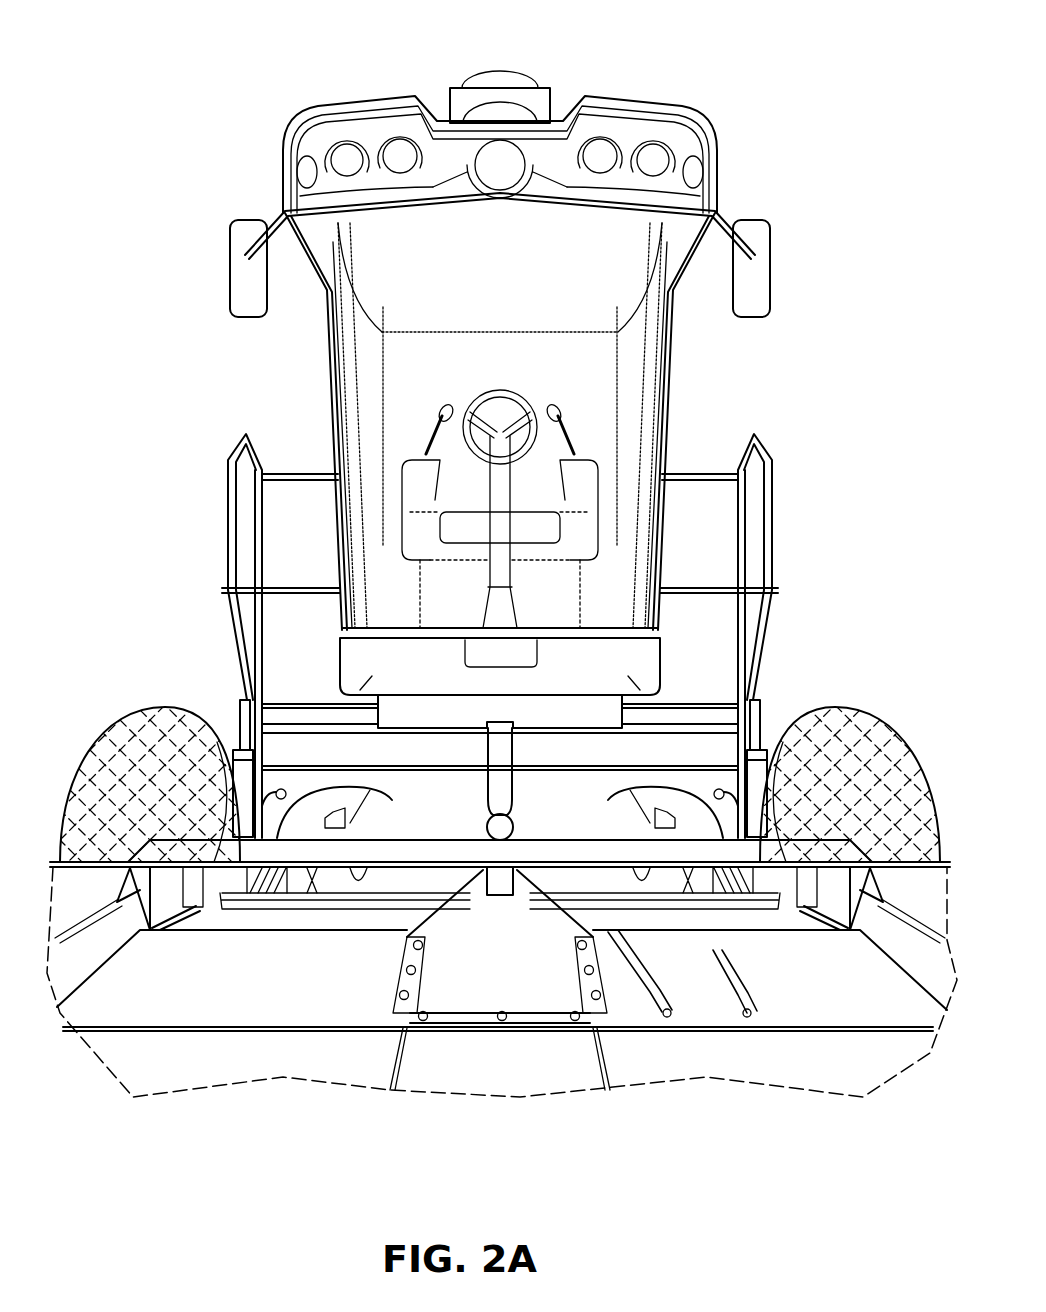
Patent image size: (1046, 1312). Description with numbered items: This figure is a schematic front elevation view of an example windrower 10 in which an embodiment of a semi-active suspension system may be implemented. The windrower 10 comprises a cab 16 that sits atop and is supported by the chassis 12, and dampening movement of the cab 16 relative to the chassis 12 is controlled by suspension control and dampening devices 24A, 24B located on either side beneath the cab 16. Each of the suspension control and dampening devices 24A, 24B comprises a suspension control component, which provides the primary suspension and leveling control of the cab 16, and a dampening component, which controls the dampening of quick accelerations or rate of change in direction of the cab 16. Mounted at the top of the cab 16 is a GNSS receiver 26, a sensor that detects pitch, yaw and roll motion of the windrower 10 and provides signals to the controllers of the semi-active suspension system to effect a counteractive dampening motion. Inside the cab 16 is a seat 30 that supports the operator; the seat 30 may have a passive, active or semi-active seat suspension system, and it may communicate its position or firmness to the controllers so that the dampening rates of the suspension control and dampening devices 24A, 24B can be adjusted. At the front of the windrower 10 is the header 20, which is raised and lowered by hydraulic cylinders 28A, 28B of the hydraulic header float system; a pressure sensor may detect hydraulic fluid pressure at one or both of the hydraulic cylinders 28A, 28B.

The windrower 10 is at (200, 165).
The chassis 12 is at (673, 770).
The cab 16 is at (653, 393).
The header 20 is at (687, 1067).
The suspension control and dampening device 24A is at (330, 820).
The suspension control and dampening device 24B is at (685, 795).
The GNSS receiver 26 is at (473, 77).
The hydraulic cylinder 28A is at (280, 797).
The hydraulic cylinder 28B is at (753, 807).
The seat 30 is at (520, 537).